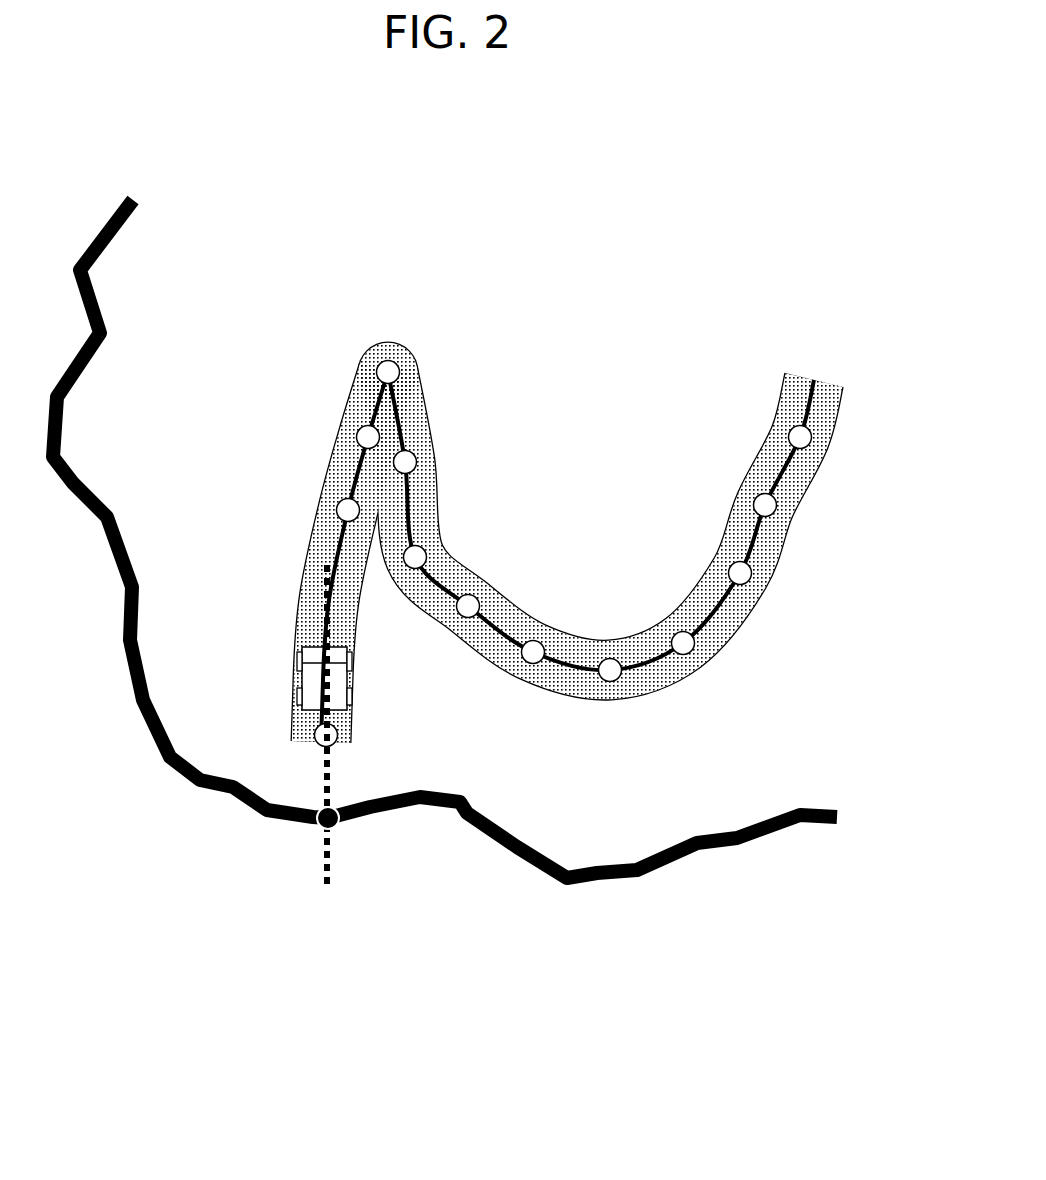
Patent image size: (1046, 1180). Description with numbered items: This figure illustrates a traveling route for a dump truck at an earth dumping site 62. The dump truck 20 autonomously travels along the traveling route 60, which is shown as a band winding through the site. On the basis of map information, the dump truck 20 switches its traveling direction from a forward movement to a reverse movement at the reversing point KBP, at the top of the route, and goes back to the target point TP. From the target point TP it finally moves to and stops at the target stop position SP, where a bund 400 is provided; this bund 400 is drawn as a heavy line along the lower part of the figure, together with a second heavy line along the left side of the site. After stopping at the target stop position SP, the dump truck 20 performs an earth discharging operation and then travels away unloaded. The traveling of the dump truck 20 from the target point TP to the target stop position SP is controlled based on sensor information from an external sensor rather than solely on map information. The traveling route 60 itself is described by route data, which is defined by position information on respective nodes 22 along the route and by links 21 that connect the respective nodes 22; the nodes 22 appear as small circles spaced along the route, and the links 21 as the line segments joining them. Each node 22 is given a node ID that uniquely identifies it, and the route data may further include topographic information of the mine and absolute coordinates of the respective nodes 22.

The dump truck 20 is at (307, 680).
The links 21 is at (572, 647).
The nodes 22 is at (470, 604).
The traveling route 60 is at (572, 695).
The earth dumping site 62 is at (656, 287).
The bund 400 is at (597, 883).
The reversing point KBP is at (389, 370).
The target point TP is at (340, 740).
The target stop position SP is at (317, 828).